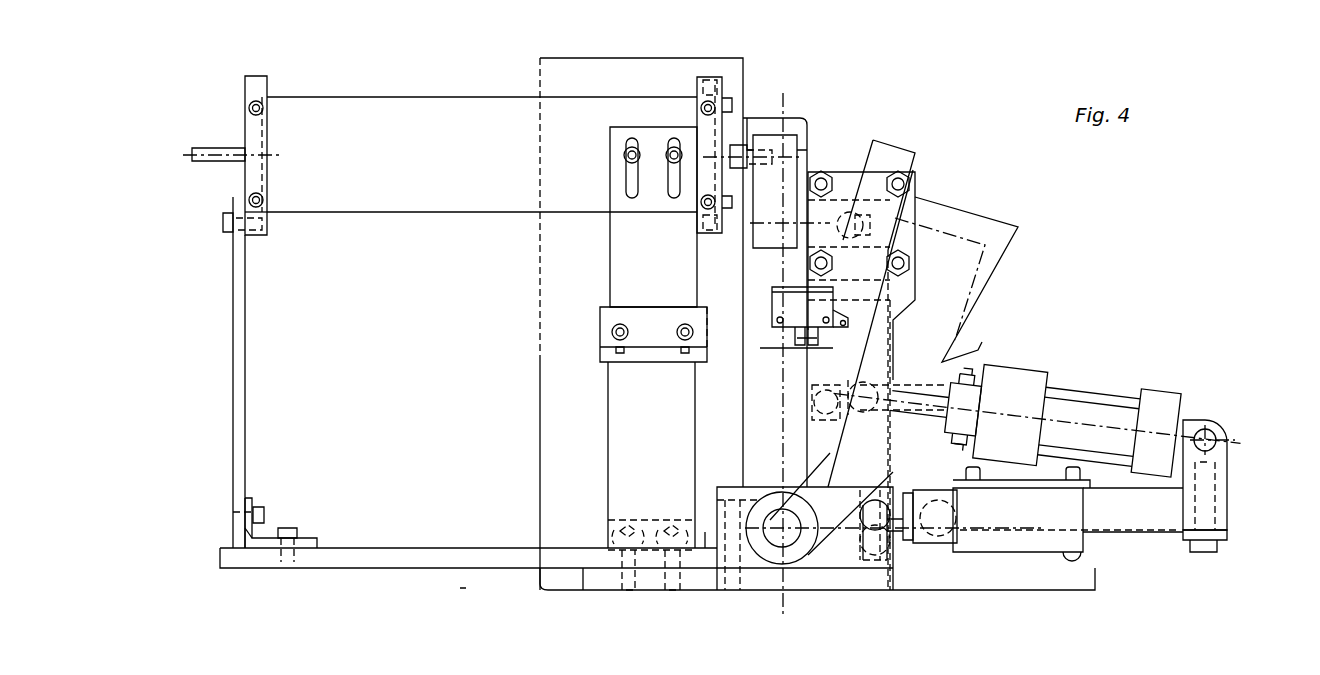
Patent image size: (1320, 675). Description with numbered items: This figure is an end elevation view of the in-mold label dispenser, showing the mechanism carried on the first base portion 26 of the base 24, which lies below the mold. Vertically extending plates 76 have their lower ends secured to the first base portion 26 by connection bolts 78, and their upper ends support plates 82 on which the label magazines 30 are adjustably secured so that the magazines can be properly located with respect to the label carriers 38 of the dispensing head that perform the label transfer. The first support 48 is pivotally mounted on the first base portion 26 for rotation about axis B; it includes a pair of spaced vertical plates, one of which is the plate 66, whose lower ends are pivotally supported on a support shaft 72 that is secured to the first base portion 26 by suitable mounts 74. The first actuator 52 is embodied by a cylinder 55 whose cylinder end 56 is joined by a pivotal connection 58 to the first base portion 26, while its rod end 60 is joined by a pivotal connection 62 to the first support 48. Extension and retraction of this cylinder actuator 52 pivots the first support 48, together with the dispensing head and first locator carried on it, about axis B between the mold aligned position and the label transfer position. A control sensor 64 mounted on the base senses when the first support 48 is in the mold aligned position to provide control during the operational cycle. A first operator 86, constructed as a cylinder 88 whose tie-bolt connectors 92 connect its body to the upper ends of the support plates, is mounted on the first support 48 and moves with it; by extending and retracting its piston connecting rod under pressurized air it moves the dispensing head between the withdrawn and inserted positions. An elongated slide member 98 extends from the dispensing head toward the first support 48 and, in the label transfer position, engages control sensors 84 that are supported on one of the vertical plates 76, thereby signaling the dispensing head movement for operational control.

The base 24 is at (534, 578).
The first base portion 26 is at (775, 580).
The label magazines 30 is at (437, 94).
The label carriers 38 is at (742, 135).
The first support 48 is at (855, 359).
The first actuator 52 is at (1058, 380).
The cylinder 55 is at (1092, 405).
The cylinder end 56 is at (1200, 425).
The pivotal connection 58 is at (1227, 455).
The rod end 60 is at (815, 405).
The pivotal connection 62 is at (872, 377).
The control sensor 64 is at (899, 532).
The plate 66 is at (985, 352).
The support shaft 72 is at (782, 515).
The mounts 74 is at (717, 493).
The vertically extending plates 76 is at (248, 324).
The connection bolts 78 is at (265, 512).
The plates 82 is at (338, 103).
The control sensors 84 is at (797, 305).
The first operator 86 is at (923, 174).
The cylinder 88 is at (837, 183).
The tie-bolt connectors 92 is at (893, 178).
The elongated slide member 98 is at (893, 320).
The axis B is at (782, 535).